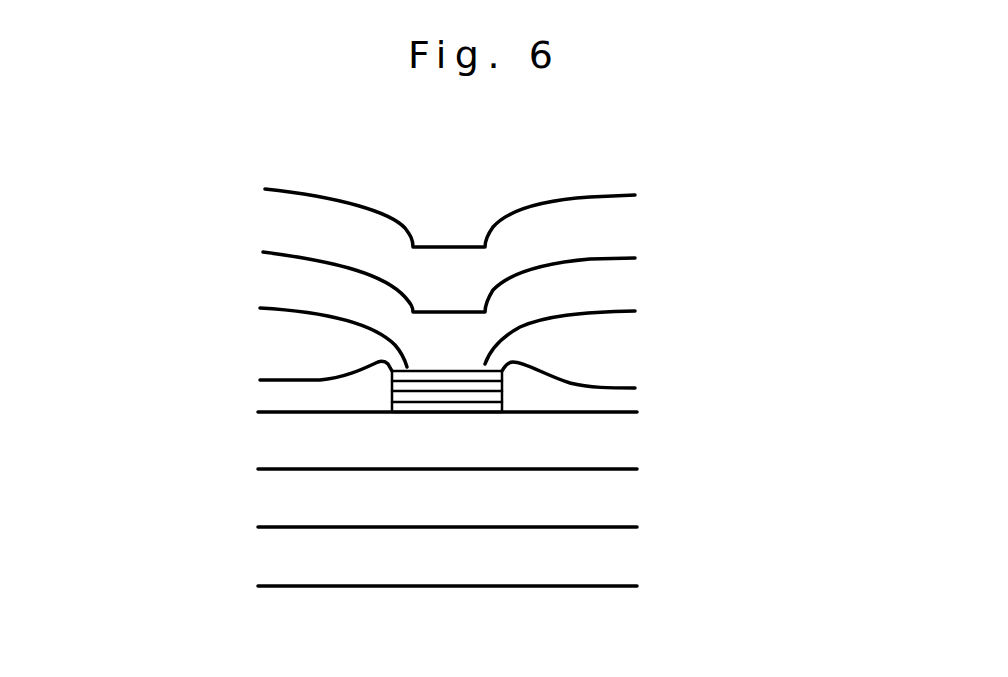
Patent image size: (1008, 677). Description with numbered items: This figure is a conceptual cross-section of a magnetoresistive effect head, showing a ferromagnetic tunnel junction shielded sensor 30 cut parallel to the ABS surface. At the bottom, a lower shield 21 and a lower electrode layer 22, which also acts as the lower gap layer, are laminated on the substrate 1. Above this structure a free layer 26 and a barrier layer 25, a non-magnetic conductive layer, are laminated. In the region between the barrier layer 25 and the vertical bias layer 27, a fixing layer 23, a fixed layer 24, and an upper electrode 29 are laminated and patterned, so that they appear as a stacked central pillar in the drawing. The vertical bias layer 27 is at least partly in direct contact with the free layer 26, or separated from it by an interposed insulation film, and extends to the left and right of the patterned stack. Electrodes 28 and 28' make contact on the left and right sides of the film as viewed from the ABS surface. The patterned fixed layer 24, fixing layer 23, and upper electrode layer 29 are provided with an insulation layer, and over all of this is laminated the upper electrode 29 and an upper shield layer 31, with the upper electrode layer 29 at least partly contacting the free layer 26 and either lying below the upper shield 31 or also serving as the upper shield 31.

The ferromagnetic tunnel junction film 30 is at (154, 190).
The upper shield layer 31 is at (607, 220).
The upper electrode layer 29 is at (607, 292).
The patterned electrode 28 is at (671, 338).
The electrode 1 28' is at (229, 337).
The vertical bias layer 27 is at (682, 392).
The free layer 26 is at (425, 373).
The barrier layer 25 is at (449, 385).
The fixed layer 24 is at (417, 397).
The fixing layer 23 is at (453, 408).
The lower electrode layer 22 is at (607, 455).
The lower shield layer 21 is at (605, 512).
The substrate 1 is at (605, 568).